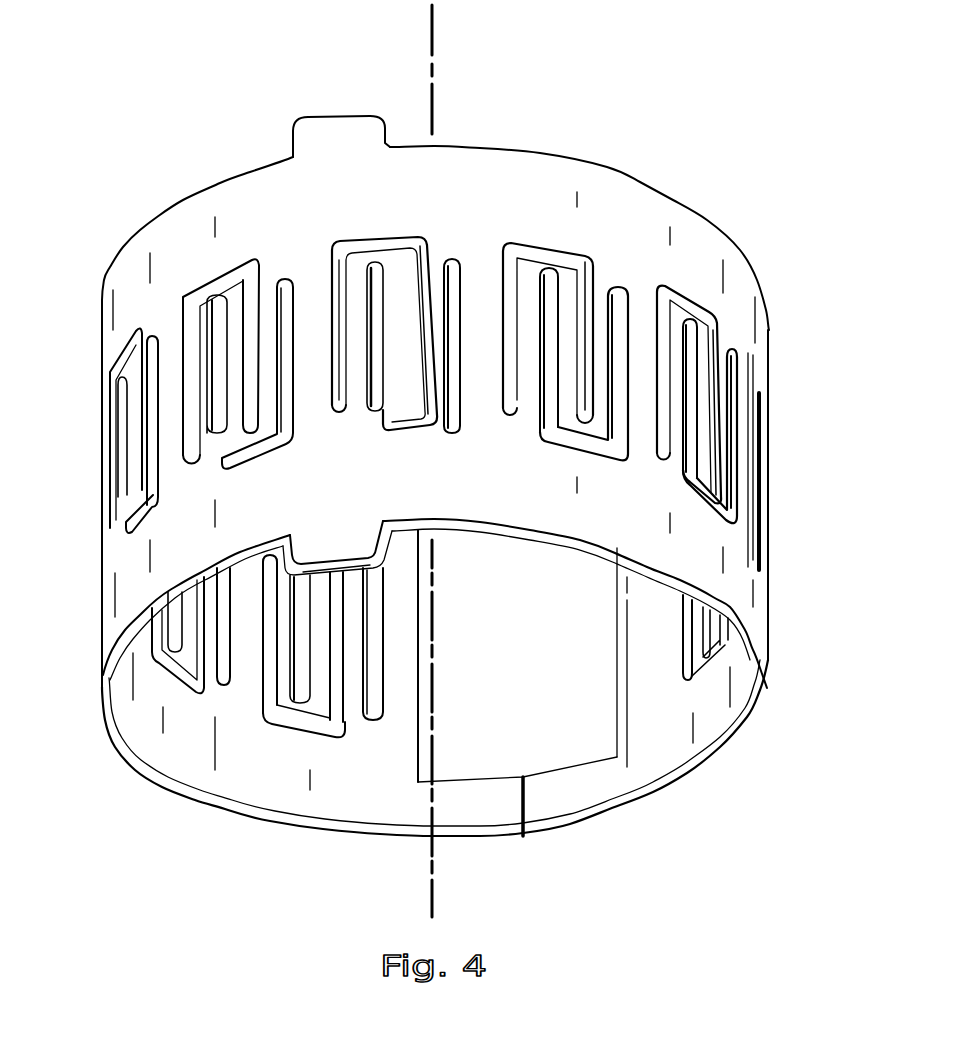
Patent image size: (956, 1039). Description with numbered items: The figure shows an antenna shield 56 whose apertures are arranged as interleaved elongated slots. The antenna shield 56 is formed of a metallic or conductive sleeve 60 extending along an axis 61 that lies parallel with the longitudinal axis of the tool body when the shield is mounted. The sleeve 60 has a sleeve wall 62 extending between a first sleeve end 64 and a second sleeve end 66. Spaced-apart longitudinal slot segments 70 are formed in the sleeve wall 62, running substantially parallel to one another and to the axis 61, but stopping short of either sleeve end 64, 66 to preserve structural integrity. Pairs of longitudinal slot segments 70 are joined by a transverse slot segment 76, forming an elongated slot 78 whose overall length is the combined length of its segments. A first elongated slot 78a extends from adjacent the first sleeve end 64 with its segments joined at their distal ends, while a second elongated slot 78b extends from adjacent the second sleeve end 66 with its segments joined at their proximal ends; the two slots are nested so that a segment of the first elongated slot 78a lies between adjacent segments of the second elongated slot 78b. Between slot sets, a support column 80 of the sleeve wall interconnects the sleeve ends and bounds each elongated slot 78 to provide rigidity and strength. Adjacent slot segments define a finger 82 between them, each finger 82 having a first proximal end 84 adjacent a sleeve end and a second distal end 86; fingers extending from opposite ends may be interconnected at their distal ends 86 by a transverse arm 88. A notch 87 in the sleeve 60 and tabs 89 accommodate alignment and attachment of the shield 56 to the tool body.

The antenna shield 56 is at (118, 186).
The sleeve 60 is at (100, 618).
The axis 61 is at (438, 30).
The sleeve wall 62 is at (670, 770).
The first sleeve end 64 is at (260, 170).
The second sleeve end 66 is at (222, 810).
The longitudinal slot segment 70 is at (452, 286).
The transverse slot segment 76 is at (386, 244).
The elongated slot 78 is at (264, 469).
The first elongated slot 78a is at (371, 230).
The second elongated slot 78b is at (554, 457).
The support column 80 is at (170, 414).
The finger 82 is at (356, 287).
The first proximal end 84 is at (356, 262).
The second distal end 86 is at (344, 392).
The notch 87 is at (615, 742).
The transverse arm 88 is at (224, 293).
The tab 89 is at (316, 122).